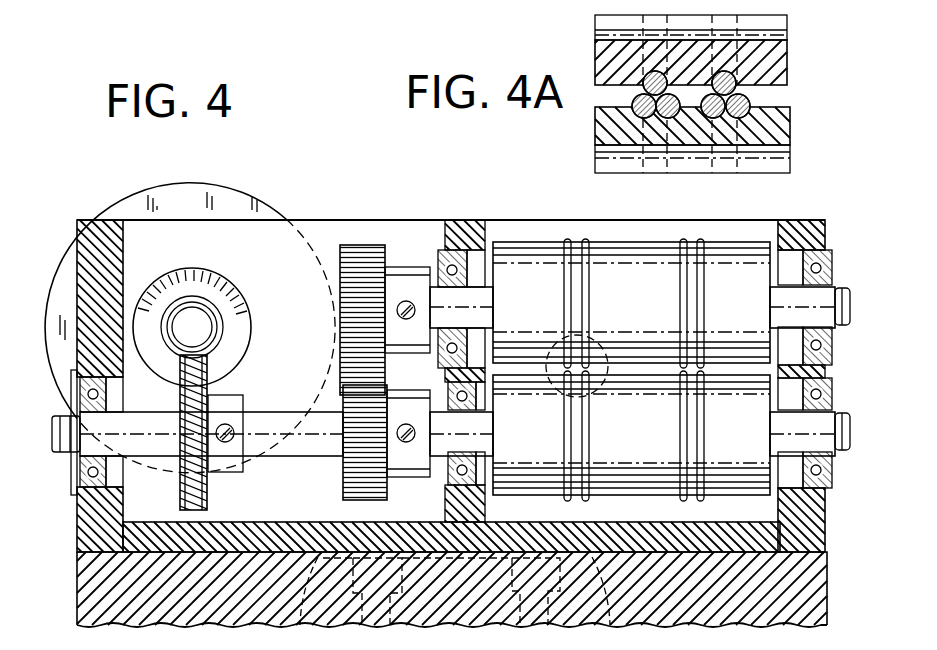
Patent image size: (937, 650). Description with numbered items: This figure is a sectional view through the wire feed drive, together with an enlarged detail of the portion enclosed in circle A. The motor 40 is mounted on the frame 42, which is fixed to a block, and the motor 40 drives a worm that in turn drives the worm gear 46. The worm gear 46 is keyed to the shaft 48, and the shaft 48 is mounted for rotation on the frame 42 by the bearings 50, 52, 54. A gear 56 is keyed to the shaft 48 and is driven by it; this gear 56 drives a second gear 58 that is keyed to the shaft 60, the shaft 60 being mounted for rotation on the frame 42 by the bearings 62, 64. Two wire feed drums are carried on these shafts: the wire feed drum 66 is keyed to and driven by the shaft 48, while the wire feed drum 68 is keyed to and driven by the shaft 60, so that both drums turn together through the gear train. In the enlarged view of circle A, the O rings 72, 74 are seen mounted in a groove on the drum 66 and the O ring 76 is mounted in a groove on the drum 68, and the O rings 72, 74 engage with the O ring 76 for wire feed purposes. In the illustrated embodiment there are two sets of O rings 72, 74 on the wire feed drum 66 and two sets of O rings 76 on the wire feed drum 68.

In FIG. 4, the motor 40 is at (240, 200).
In FIG. 4, the frame 42 is at (377, 232).
In FIG. 4, the worm gear 46 is at (202, 488).
In FIG. 4, the shaft 48 is at (300, 458).
In FIG. 4, the bearing 50 is at (78, 482).
In FIG. 4, the bearing 52 is at (455, 478).
In FIG. 4, the bearing 54 is at (832, 390).
In FIG. 4, the gear 56 is at (360, 398).
In FIG. 4, the gear 58 is at (345, 293).
In FIG. 4, the shaft 60 is at (480, 307).
In FIG. 4, the bearing 62 is at (440, 250).
In FIG. 4, the bearing 64 is at (832, 262).
In FIG. 4, the wire feed drum 66 is at (651, 448).
In FIG. 4, the wire feed drum 68 is at (656, 308).
In FIG. 4, the circle A is at (558, 394).
In FIG. 4A, the O ring 72 is at (638, 112).
In FIG. 4A, the O ring 74 is at (746, 112).
In FIG. 4A, the O ring 76 is at (648, 77).